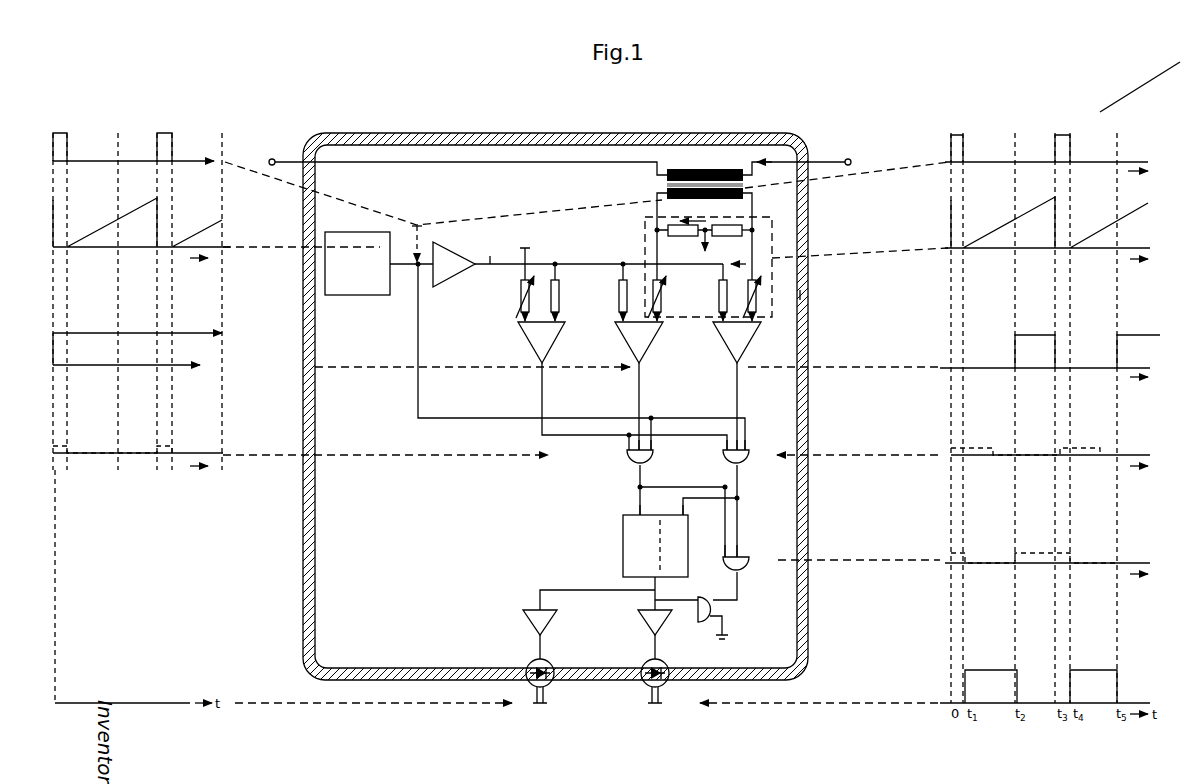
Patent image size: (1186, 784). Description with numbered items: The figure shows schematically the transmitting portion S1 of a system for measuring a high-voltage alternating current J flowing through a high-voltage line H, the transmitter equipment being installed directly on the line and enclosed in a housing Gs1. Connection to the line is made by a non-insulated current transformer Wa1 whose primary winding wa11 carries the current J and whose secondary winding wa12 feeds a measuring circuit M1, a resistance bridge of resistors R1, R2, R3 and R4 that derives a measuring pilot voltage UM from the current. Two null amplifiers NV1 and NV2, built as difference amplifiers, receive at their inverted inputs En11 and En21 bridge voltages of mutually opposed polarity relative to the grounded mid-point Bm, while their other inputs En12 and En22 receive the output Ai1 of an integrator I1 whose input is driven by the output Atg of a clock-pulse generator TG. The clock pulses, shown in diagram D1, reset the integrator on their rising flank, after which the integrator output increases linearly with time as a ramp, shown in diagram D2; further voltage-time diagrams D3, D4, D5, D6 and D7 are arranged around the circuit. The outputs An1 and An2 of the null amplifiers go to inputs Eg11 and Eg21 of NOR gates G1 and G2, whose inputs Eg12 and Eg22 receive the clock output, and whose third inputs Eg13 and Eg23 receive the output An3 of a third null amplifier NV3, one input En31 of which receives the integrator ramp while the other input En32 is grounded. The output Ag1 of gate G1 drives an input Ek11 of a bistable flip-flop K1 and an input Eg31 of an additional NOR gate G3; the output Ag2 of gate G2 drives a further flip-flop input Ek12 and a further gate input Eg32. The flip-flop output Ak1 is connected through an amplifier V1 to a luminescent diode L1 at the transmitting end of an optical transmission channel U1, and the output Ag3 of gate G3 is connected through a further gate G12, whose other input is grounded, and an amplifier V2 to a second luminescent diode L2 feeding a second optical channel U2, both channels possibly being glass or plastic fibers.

The clock-pulse generator TG is at (379, 263).
The output of the clock-pulse generator Atg is at (569, 338).
The integrator I1 is at (454, 264).
The output of the integrator Ai1 is at (599, 251).
The current transformer Wa1 is at (695, 213).
The primary winding wa11 is at (705, 164).
The secondary winding wa12 is at (662, 203).
The alternating current J is at (556, 159).
The high-voltage line H is at (825, 162).
The measuring pilot voltage UM is at (696, 214).
The resistor R1 is at (684, 237).
The resistor R2 is at (728, 237).
The grounded mid-point of the bridge network Bm is at (721, 249).
The measuring circuit M1 is at (770, 243).
The resistor R3 is at (661, 299).
The resistor R4 is at (757, 299).
The transmitting portion S1 is at (800, 296).
The housing Gs1 is at (805, 323).
The input of the third null amplifier En32 is at (521, 310).
The input of the third null amplifier En31 is at (559, 322).
The input of the first null amplifier En12 is at (618, 322).
The inverted input of the first null amplifier En11 is at (657, 326).
The input of the second null amplifier En22 is at (722, 320).
The inverted input of the second null amplifier En21 is at (754, 320).
The third null amplifier NV3 is at (535, 344).
The first null amplifier NV1 is at (633, 344).
The second null amplifier NV2 is at (730, 344).
The output of the third null amplifier An3 is at (542, 386).
The output of the first null amplifier An1 is at (639, 386).
The output of the second null amplifier An2 is at (737, 386).
The third input of gate G1 Eg13 is at (626, 443).
The input of gate G1 Eg12 is at (632, 452).
The input of gate G1 Eg11 is at (645, 455).
The NOR gate G1 is at (653, 461).
The output of gate G1 Ag1 is at (641, 470).
The third input of gate G2 Eg23 is at (741, 436).
The input of gate G2 Eg21 is at (749, 453).
The input of gate G2 Eg22 is at (751, 458).
The NOR gate G2 is at (723, 461).
The output of gate G2 Ag2 is at (733, 468).
The input of the flip-flop Ek11 is at (639, 509).
The further input of the flip-flop Ek12 is at (685, 505).
The bistable flip-flop K1 is at (655, 546).
The input of gate G3 Eg31 is at (707, 543).
The further input of gate G3 Eg32 is at (755, 543).
The additional NOR gate G3 is at (750, 563).
The output of gate G3 Ag3 is at (740, 578).
The output of the flip-flop Ak1 is at (619, 593).
The amplifier V1 is at (540, 622).
The amplifier V2 is at (655, 622).
The further gate G12 is at (713, 627).
The luminescent diode L1 is at (549, 666).
The second luminescent diode L2 is at (664, 666).
The optical transmission channel U1 is at (551, 703).
The second optical transmission channel U2 is at (666, 703).
The voltage-time diagram of clock pulses D1 is at (128, 157).
The voltage-time diagram of ramp voltage D2 is at (133, 232).
The diagram D3 is at (1060, 360).
The diagram D4 is at (133, 359).
The diagram truth table D5 is at (144, 433).
The diagram truth table D6 is at (1043, 433).
The diagram truth table D7 is at (1043, 543).